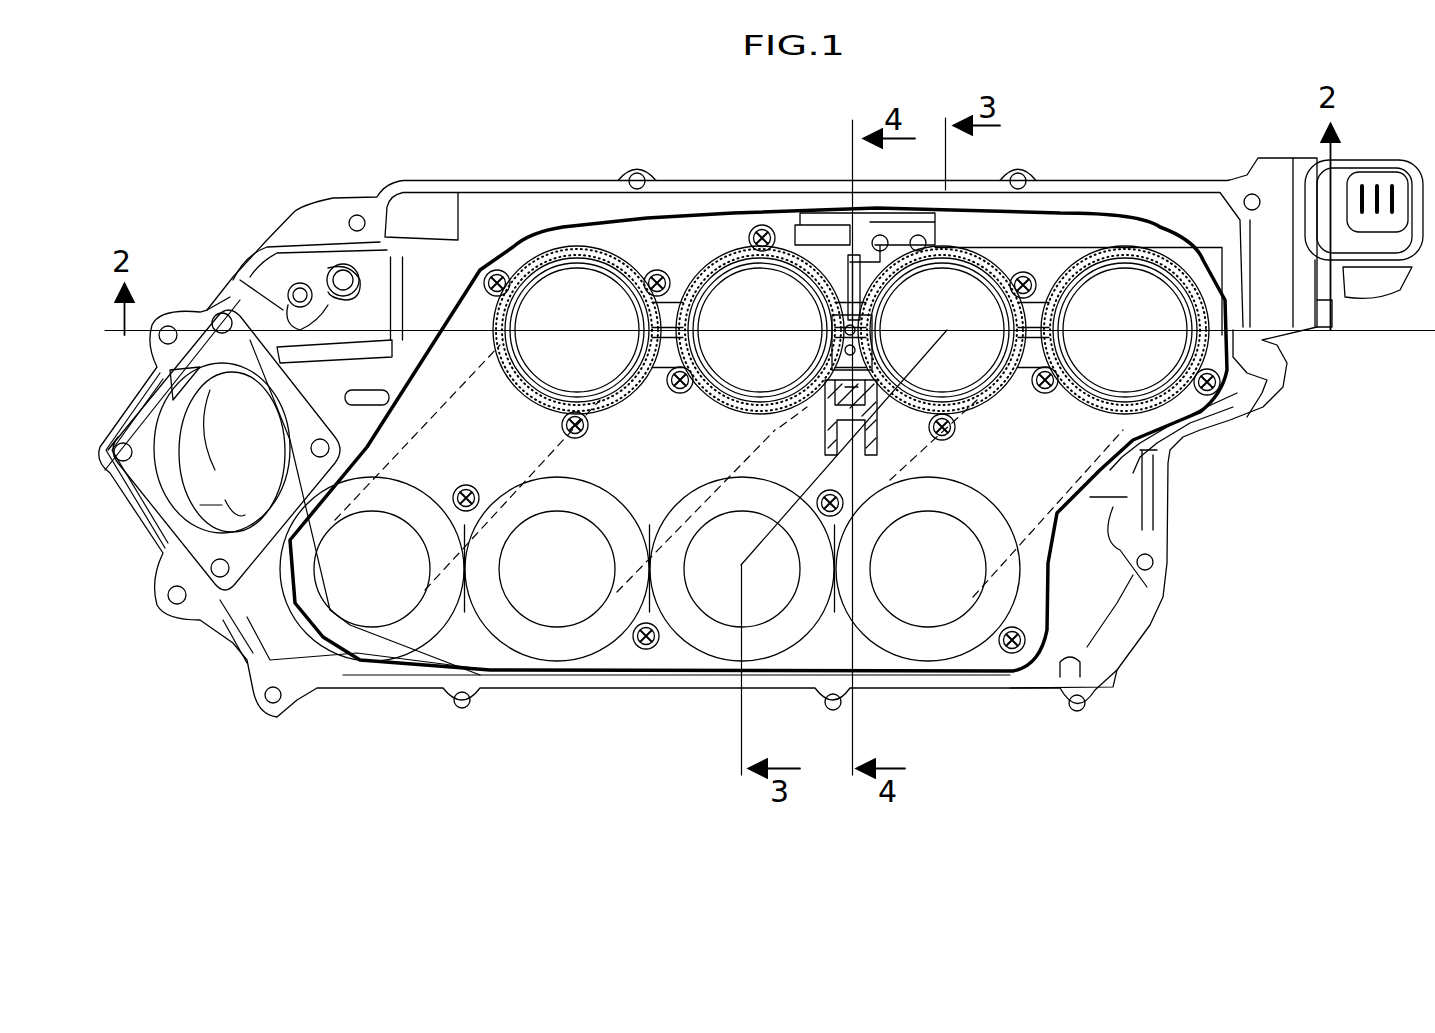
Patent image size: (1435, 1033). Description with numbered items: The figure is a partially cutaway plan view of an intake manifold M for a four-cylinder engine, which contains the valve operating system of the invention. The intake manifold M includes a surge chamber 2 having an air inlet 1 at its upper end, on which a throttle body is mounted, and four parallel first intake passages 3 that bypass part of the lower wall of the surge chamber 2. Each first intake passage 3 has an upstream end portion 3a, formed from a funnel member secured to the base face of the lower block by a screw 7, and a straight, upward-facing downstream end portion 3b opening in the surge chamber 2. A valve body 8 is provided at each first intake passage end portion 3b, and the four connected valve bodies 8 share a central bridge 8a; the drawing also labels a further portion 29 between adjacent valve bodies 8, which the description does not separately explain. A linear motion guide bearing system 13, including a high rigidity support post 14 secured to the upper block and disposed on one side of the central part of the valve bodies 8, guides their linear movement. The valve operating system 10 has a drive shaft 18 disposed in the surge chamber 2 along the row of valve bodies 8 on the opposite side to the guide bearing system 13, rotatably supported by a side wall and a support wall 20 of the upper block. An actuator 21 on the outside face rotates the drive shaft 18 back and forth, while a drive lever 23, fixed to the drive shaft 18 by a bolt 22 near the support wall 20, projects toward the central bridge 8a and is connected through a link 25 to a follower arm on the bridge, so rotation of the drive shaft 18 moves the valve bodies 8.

The air inlet 1 is at (255, 407).
The surge chamber 2 is at (664, 478).
The first intake passage 3 is at (440, 412).
The upstream end portion of the first intake passage 3a is at (398, 640).
The downstream end portion of the first intake passage 3b is at (554, 272).
The screw 7 is at (462, 488).
The valve body 8 is at (578, 256).
The central bridge 8a is at (668, 345).
The valve operating system 10 is at (900, 228).
The linear motion guide bearing system 13 is at (860, 455).
The support post 14 is at (830, 430).
The drive shaft 18 is at (1078, 232).
The support wall 20 is at (822, 235).
The actuator 21 is at (1378, 285).
The bolt 22 is at (895, 250).
The drive lever 23 is at (862, 280).
The link 25 is at (846, 300).
The connecting web 29 is at (668, 268).
The intake manifold M is at (1166, 180).